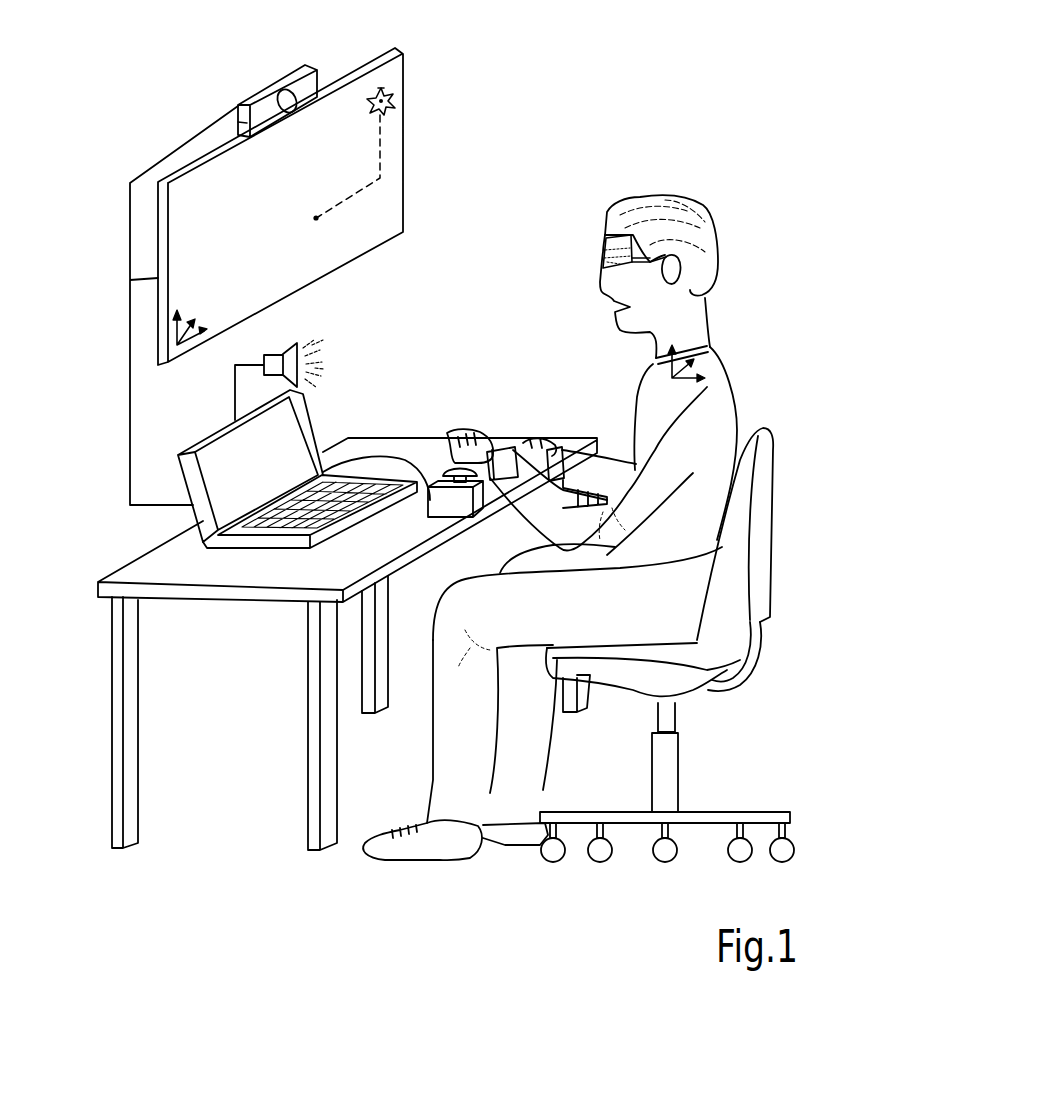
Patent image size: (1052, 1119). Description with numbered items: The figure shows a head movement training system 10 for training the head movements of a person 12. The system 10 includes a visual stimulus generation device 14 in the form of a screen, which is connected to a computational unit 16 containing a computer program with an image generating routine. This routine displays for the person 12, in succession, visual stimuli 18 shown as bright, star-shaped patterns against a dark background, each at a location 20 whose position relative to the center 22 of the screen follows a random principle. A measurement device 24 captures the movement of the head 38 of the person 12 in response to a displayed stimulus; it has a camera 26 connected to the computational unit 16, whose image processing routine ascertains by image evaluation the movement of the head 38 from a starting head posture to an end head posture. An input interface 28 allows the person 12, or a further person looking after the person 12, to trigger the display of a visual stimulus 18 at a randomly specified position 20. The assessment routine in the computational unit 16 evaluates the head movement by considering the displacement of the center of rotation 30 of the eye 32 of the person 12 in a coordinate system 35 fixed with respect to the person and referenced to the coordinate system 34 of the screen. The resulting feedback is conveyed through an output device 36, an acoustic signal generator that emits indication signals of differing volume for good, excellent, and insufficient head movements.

The system 10 is at (619, 57).
The person 12 is at (718, 372).
The visual stimulus generation device 14 is at (406, 130).
The computational unit 16 is at (310, 420).
The visual stimuli 18 is at (391, 90).
The location 20 is at (381, 88).
The center 22 is at (319, 220).
The measurement device 24 is at (239, 103).
The camera 26 is at (280, 83).
The input interface 28 is at (434, 483).
The center of rotation 30 is at (604, 240).
The eye 32 is at (632, 236).
The coordinate system of the screen 34 is at (185, 347).
The coordinate system 35 is at (663, 365).
The output device 36 is at (272, 357).
The head 38 is at (680, 197).